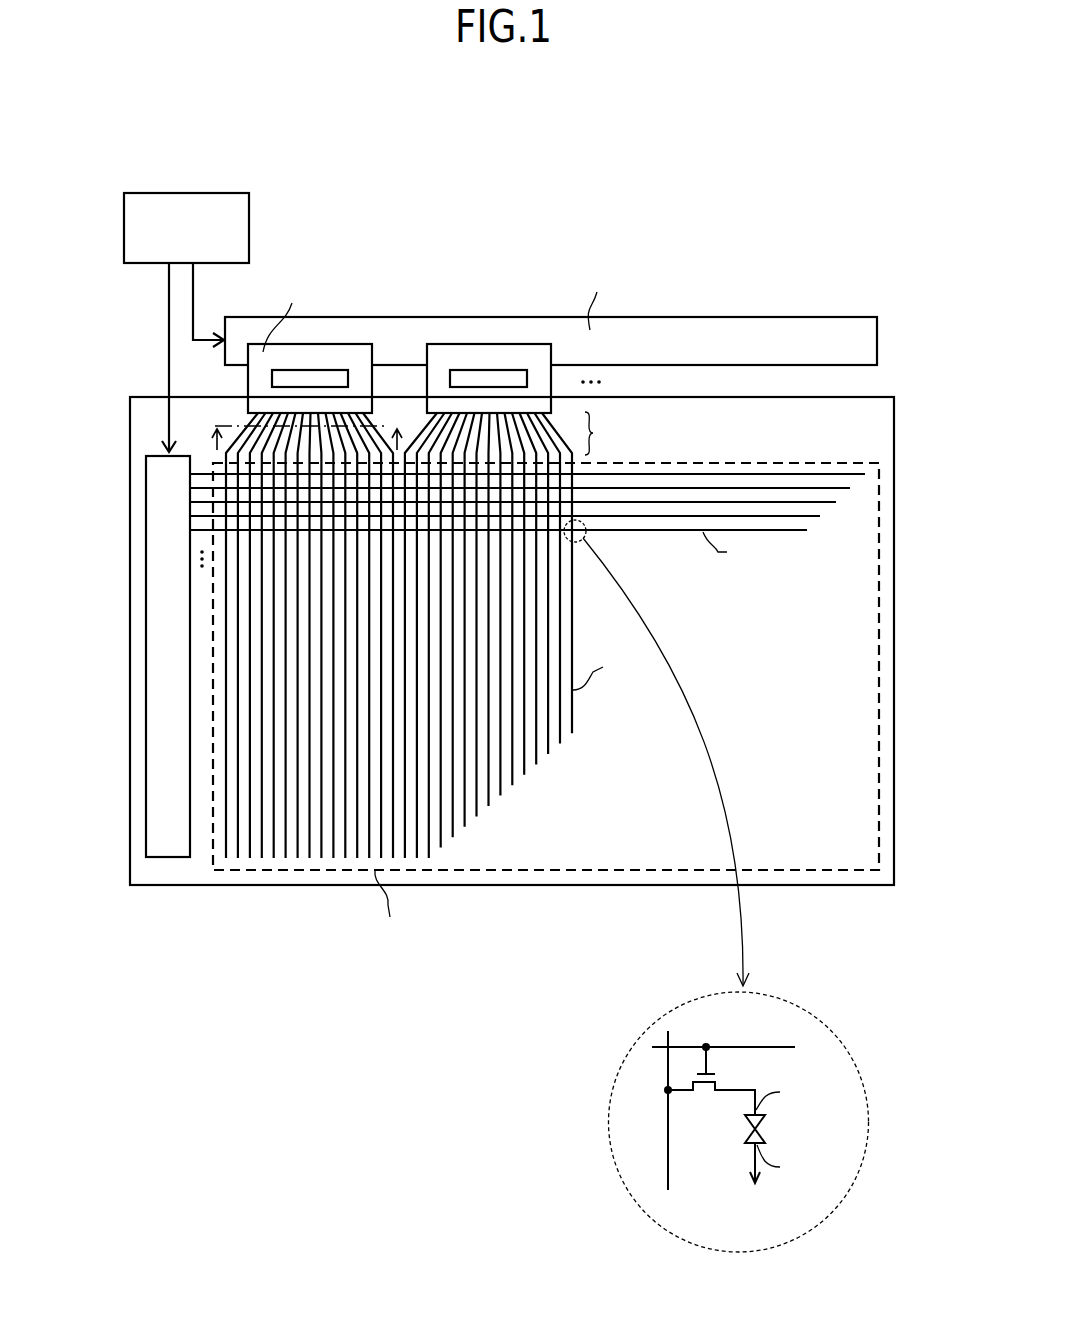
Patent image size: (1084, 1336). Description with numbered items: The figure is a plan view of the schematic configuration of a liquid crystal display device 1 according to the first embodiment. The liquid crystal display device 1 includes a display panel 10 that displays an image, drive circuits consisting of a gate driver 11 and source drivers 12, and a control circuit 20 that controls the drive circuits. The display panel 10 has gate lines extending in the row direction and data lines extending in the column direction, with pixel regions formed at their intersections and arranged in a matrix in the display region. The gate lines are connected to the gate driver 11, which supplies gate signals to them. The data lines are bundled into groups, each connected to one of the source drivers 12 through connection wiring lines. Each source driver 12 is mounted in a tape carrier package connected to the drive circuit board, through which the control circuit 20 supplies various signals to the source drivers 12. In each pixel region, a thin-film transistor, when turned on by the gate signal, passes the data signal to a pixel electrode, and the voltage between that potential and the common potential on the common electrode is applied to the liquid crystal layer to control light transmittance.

The liquid crystal display device 1 is at (792, 210).
The control circuit 20 is at (186, 193).
The source driver 12 is at (310, 370).
The gate driver 11 is at (143, 597).
The display panel 10 is at (243, 885).